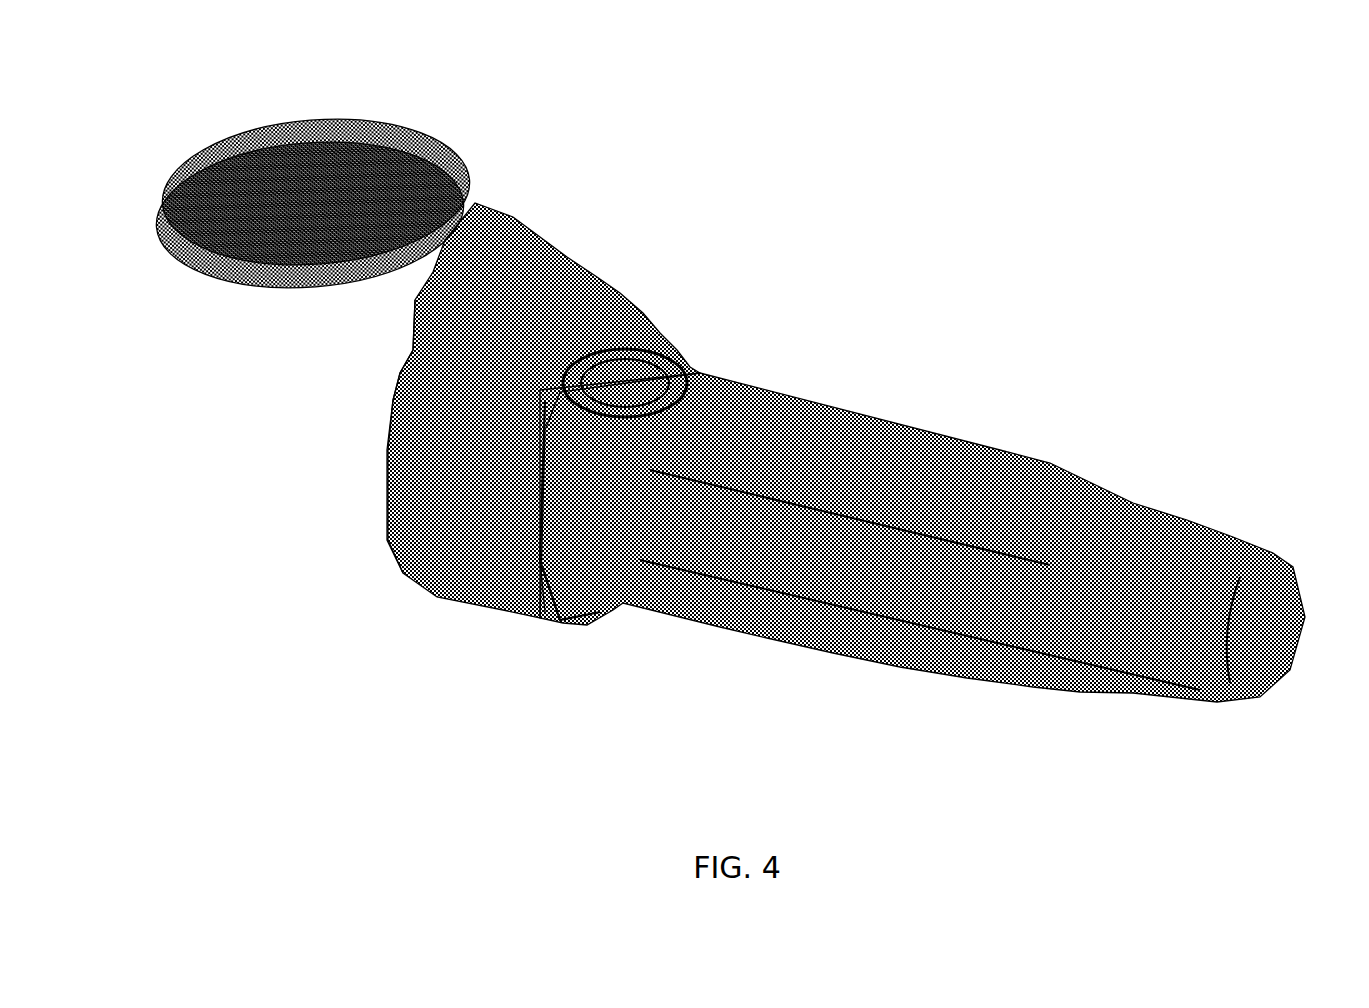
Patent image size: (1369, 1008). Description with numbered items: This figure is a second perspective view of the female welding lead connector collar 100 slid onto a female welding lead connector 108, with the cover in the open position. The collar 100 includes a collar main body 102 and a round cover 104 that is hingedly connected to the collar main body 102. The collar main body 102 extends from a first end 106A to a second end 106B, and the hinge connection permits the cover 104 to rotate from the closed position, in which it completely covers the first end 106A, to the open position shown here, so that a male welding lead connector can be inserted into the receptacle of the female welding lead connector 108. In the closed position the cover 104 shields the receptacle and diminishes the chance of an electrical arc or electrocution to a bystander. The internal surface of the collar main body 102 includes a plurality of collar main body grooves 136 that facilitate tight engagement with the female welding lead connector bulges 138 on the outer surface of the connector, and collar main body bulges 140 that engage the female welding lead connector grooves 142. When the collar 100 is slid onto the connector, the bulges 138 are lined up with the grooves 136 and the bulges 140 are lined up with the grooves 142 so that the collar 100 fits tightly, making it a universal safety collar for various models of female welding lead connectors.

The female welding lead connector collar 100 is at (728, 412).
The collar main body 102 is at (480, 470).
The cover 104 is at (358, 150).
The first end 106A is at (378, 487).
The second end 106B is at (533, 553).
The female welding lead connector 108 is at (917, 517).
The collar main body grooves 136 is at (550, 583).
The female welding lead connector bulges 138 is at (893, 510).
The collar main body bulges 140 is at (543, 530).
The female welding lead connector grooves 142 is at (767, 538).